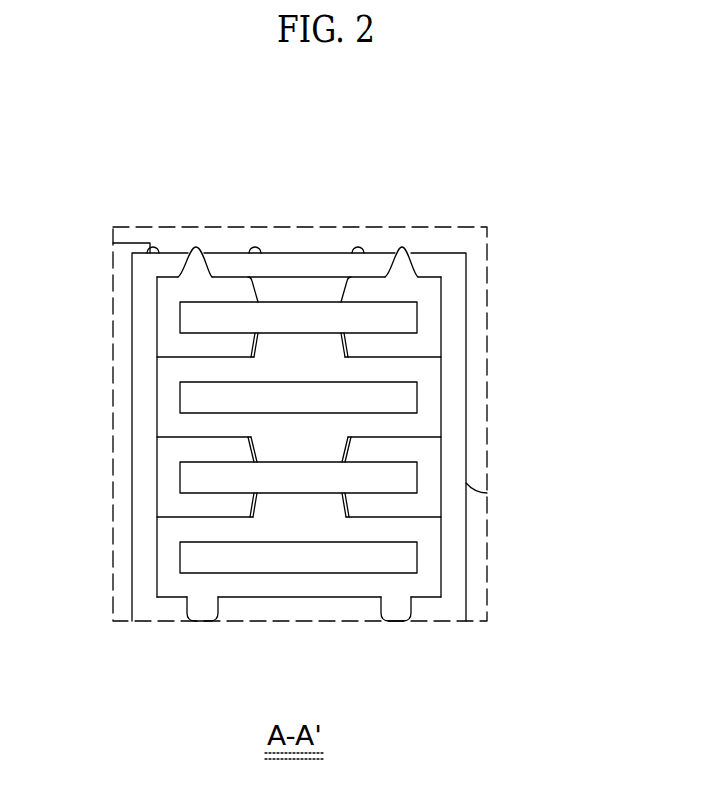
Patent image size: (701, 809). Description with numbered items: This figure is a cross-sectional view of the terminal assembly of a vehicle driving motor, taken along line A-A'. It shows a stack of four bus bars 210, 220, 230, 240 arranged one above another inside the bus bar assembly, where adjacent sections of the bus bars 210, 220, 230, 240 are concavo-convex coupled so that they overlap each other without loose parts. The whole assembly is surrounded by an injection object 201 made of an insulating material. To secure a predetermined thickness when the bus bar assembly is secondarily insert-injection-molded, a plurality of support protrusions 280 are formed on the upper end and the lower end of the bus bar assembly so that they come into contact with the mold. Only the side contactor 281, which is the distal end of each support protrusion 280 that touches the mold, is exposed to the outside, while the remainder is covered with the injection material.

The injection object 201 is at (458, 390).
The bus bar 210 is at (422, 560).
The bus bar 220 is at (422, 478).
The bus bar 230 is at (178, 397).
The bus bar 240 is at (178, 320).
The support protrusion 280 is at (192, 267).
The side contactor 281 is at (358, 248).